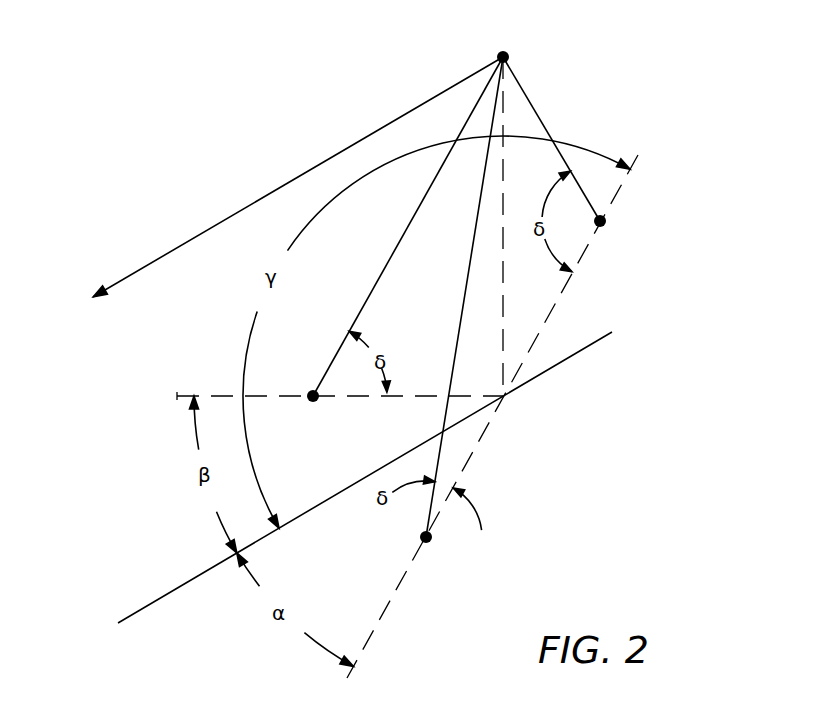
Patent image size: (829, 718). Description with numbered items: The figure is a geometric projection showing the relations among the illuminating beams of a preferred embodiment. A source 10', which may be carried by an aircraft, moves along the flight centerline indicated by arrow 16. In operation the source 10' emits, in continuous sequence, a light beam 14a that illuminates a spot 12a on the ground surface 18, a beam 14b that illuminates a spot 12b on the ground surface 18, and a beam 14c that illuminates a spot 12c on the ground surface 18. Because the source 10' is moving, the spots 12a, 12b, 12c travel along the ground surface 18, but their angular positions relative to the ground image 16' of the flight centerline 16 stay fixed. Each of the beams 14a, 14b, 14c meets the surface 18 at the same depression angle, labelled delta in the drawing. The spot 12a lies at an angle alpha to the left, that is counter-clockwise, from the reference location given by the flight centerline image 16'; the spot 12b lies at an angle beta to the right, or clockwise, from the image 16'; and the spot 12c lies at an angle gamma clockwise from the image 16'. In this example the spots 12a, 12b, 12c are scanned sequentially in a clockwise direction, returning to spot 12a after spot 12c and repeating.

The source 10' is at (526, 40).
The spot 12a is at (431, 543).
The spot 12b is at (314, 404).
The spot 12c is at (605, 228).
The light beam 14a is at (462, 308).
The beam 14b is at (390, 258).
The beam 14c is at (529, 100).
The flight centerline 16 is at (298, 177).
The ground image of flight centerline 16' is at (365, 477).
The ground surface 18 is at (591, 459).